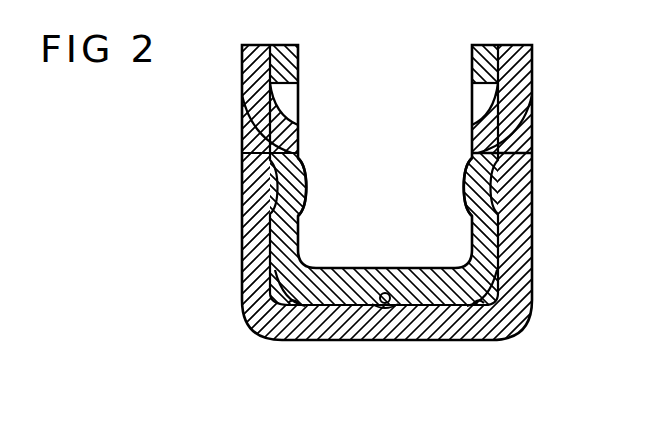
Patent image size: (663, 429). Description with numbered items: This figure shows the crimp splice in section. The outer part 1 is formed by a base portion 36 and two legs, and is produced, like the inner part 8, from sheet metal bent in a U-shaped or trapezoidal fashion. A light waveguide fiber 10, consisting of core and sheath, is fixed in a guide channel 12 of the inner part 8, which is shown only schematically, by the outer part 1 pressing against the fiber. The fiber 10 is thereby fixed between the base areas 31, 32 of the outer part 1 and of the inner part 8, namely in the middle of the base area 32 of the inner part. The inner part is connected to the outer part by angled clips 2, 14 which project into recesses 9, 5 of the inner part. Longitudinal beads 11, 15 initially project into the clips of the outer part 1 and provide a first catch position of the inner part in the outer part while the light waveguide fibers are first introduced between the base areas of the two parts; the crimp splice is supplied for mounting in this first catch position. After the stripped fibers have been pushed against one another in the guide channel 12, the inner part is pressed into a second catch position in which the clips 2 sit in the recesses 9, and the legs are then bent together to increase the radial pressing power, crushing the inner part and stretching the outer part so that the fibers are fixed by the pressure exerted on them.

The outer part 1 is at (534, 203).
The angled clip 2 is at (557, 86).
The recess 5 is at (291, 103).
The inner part 8 is at (302, 48).
The recess 9 is at (488, 98).
The light waveguide fiber 10 is at (383, 303).
The longitudinal bead 11 is at (470, 192).
The guide channel 12 is at (389, 293).
The angled clip 14 is at (252, 128).
The longitudinal bead 15 is at (304, 190).
The base area 31 is at (303, 318).
The base area 32 is at (458, 312).
The base portion 36 is at (343, 326).